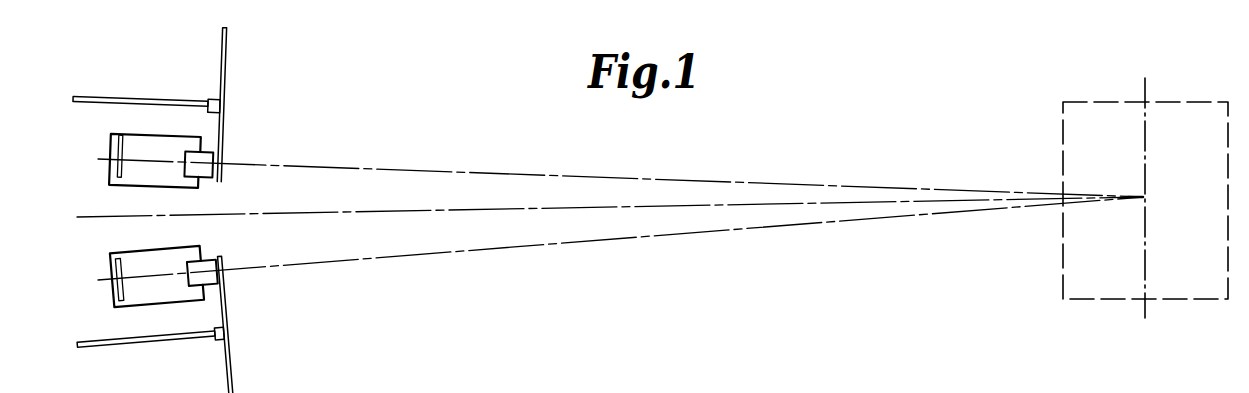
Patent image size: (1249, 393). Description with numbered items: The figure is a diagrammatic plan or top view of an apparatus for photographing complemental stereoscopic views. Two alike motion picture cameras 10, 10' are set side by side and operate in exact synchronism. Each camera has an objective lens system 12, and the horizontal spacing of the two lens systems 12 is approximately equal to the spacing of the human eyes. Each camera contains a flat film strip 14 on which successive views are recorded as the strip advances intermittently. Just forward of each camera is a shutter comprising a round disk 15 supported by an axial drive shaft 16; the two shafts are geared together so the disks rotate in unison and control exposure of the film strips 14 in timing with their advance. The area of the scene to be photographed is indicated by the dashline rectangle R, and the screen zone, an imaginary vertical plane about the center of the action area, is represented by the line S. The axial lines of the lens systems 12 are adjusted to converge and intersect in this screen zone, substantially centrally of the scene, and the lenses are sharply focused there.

The motion picture camera 10 is at (135, 269).
The motion picture camera 10' is at (133, 152).
The objective lens system 12 is at (200, 156).
The film strip 14 is at (118, 172).
The shutter disk 15 is at (225, 49).
The axial drive shaft 16 is at (140, 98).
The dashline rectangle R is at (1063, 143).
The screen zone line S is at (1149, 201).